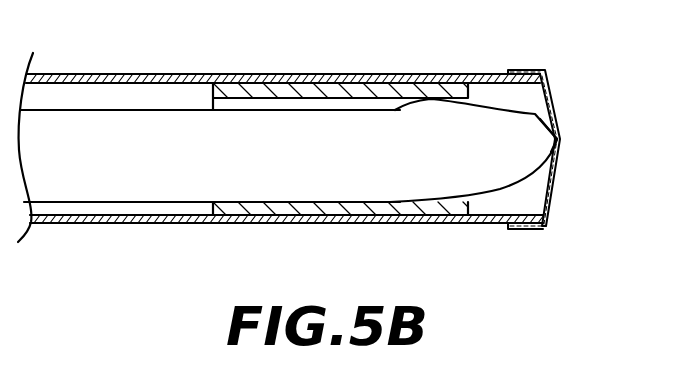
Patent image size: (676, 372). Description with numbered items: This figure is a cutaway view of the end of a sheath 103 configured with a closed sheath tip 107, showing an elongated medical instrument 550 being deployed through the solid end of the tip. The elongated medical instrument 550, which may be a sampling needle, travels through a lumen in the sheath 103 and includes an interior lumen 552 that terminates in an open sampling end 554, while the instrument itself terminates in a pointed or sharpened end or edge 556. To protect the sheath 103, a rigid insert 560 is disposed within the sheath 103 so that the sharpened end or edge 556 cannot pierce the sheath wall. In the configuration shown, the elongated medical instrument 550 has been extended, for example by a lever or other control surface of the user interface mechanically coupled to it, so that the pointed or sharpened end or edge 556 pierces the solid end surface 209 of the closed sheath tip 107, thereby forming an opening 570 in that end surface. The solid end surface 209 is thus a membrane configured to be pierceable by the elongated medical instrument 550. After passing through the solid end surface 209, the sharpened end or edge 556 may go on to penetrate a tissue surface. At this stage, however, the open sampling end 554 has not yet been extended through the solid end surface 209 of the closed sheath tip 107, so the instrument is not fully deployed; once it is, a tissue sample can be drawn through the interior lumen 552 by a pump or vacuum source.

The sheath 103 is at (148, 74).
The elongated medical instrument 550 is at (131, 202).
The interior lumen 552 is at (284, 161).
The open sampling end 554 is at (482, 110).
The pointed or sharpened end or edge 556 is at (560, 138).
The rigid insert 560 is at (396, 207).
The opening 570 is at (558, 164).
The solid end surface 209 is at (546, 60).
The closed sheath tip 107 is at (522, 238).